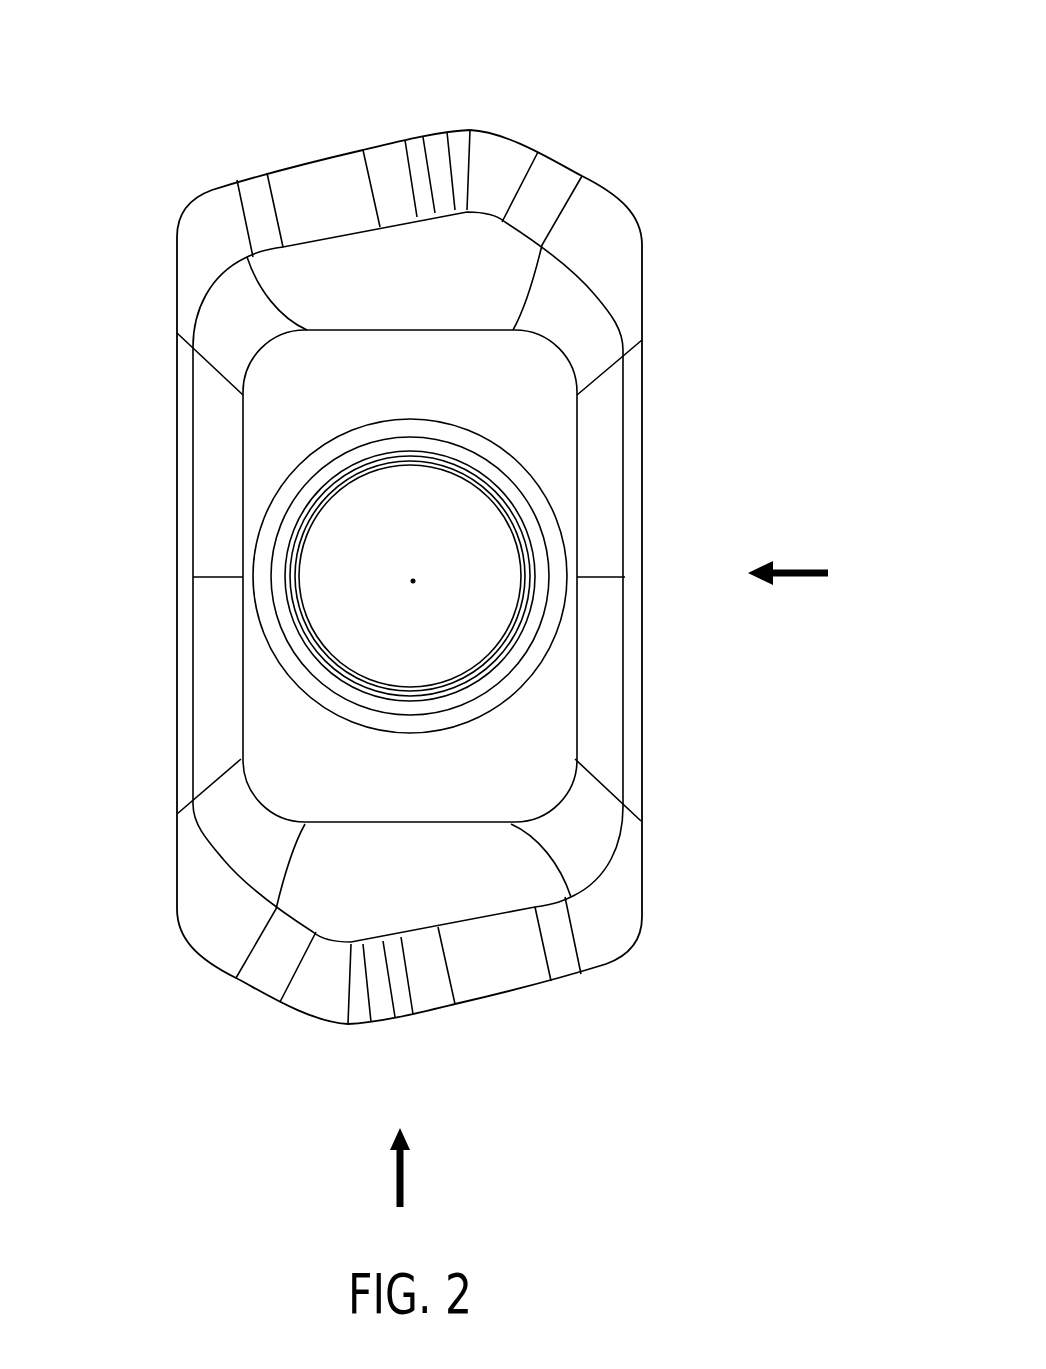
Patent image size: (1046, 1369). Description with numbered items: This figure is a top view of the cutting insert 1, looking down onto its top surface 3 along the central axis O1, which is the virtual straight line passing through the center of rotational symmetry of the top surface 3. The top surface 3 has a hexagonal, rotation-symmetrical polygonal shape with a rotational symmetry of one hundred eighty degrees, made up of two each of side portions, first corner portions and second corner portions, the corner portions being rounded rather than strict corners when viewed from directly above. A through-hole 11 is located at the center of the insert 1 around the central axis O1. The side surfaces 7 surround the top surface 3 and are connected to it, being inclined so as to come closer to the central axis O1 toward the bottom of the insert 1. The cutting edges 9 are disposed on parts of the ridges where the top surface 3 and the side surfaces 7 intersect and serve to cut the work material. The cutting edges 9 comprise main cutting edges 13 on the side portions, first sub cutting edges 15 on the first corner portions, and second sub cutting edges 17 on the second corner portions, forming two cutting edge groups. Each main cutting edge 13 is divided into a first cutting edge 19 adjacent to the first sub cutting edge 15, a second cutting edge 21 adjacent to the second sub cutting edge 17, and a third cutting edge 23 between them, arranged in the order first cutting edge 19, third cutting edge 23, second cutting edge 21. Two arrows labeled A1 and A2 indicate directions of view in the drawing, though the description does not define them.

The cutting insert 1 is at (606, 143).
The top surface 3 is at (267, 470).
The side surfaces 7 is at (178, 718).
The cutting edges 9 is at (408, 584).
The through-hole 11 is at (520, 538).
The main cutting edges 13 is at (414, 579).
The first sub cutting edges 15 is at (458, 130).
The second sub cutting edges 17 is at (195, 198).
The first cutting edge 19 is at (417, 133).
The second cutting edge 21 is at (252, 173).
The third cutting edge 23 is at (353, 147).
The central axis O1 is at (419, 600).
The direction arrow A1 is at (810, 574).
The direction arrow A2 is at (379, 1167).